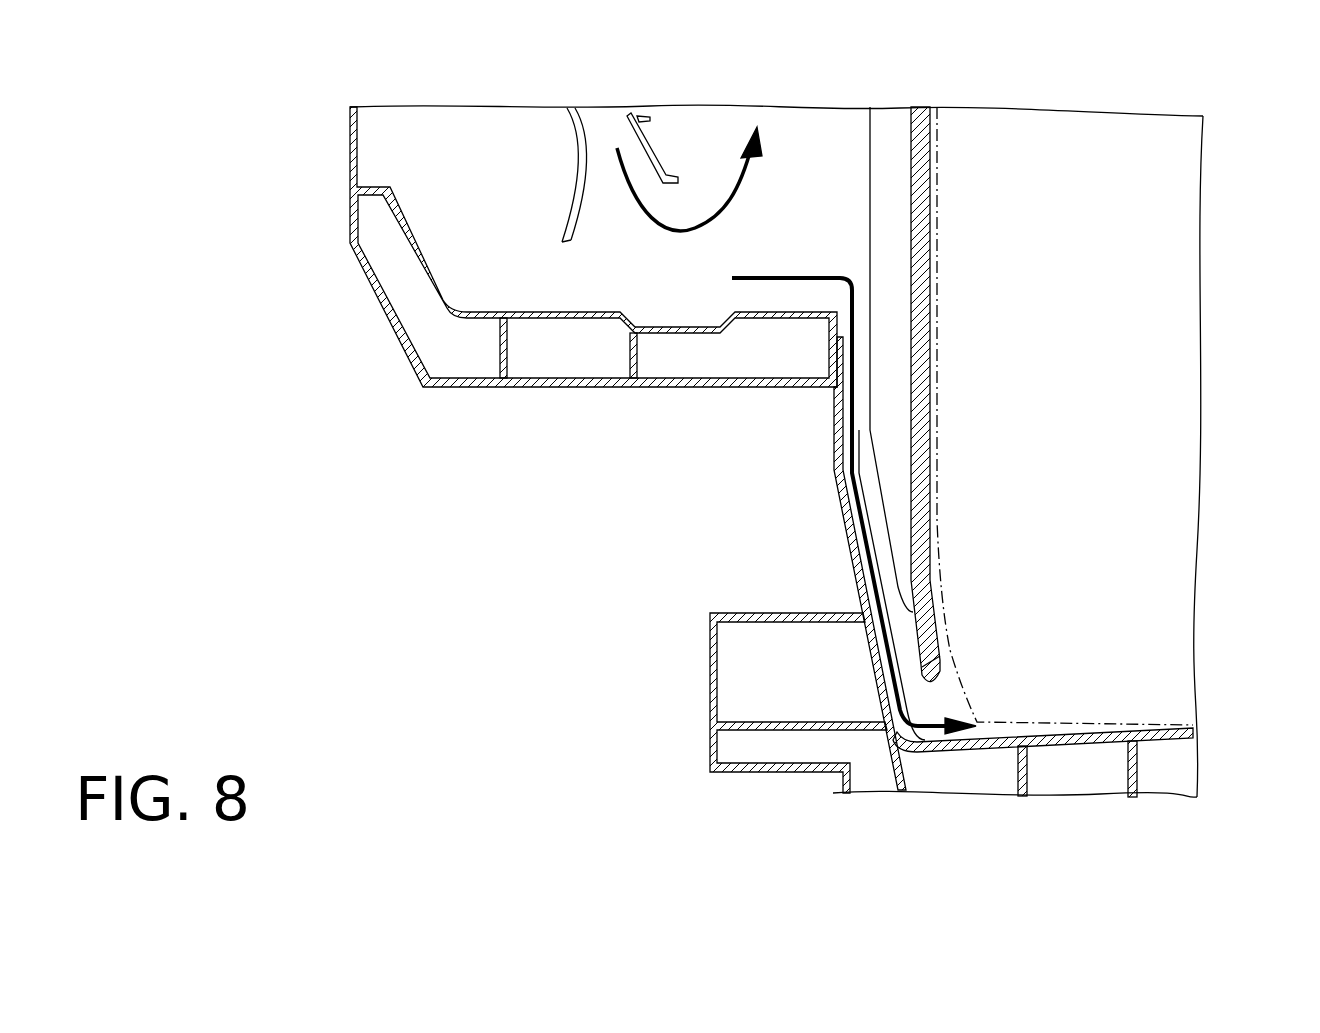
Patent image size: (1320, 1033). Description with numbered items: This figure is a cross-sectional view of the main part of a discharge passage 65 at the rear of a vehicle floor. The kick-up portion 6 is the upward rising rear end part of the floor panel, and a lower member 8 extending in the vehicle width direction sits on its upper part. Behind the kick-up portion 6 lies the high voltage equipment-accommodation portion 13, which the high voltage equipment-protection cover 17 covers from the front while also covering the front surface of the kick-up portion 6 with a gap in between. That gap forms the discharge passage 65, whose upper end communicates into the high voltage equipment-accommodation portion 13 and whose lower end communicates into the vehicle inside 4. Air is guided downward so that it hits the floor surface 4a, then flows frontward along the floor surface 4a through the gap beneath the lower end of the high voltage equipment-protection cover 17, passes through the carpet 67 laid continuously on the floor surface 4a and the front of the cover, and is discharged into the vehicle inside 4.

The vehicle inside 4 is at (1138, 272).
The floor surface 4a is at (1142, 728).
The kick-up portion 6 is at (847, 513).
The lower member 8 is at (557, 387).
The high voltage equipment-accommodation portion 13 is at (791, 172).
The high voltage equipment-protection cover 17 is at (888, 160).
The discharge passage 65 is at (888, 504).
The carpet 67 is at (1125, 722).